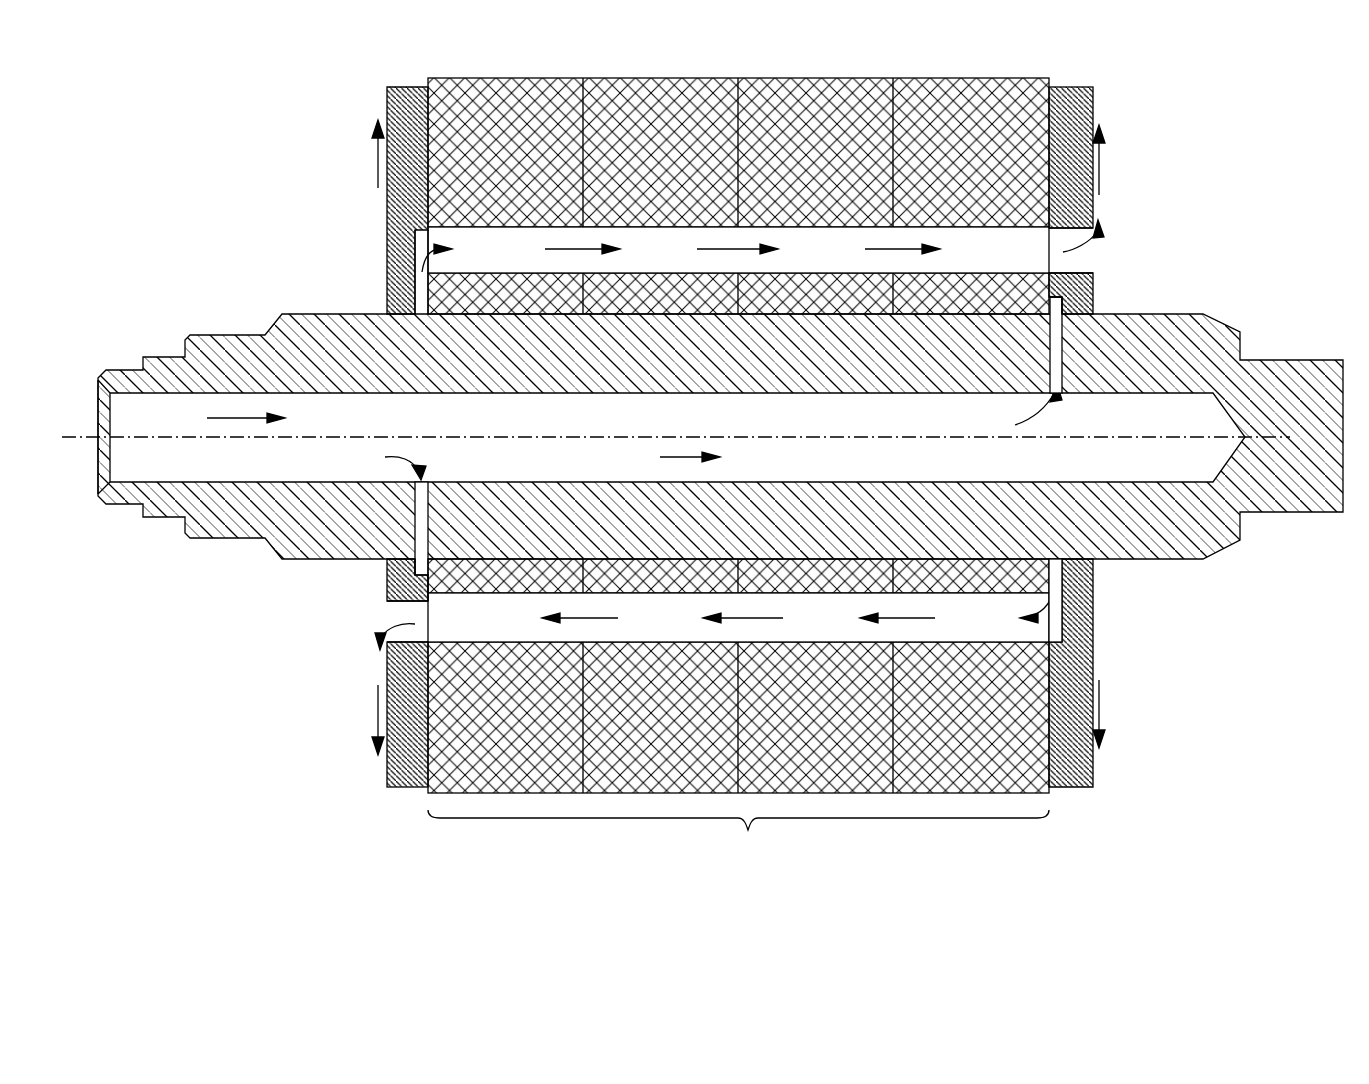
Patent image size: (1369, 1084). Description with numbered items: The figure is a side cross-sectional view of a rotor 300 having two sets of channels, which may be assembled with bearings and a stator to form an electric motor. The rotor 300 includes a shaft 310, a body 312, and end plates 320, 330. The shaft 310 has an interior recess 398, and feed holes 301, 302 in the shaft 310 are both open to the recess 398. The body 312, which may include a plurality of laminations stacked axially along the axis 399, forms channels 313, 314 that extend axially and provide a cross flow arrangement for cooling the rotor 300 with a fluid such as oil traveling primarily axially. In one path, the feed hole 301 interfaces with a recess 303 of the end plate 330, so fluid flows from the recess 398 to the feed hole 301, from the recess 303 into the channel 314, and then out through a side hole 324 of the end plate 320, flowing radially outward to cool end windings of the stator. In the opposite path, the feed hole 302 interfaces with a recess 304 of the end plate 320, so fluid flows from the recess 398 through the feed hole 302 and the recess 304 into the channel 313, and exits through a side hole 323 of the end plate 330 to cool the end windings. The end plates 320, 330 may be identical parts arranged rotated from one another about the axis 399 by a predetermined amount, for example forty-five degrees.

The rotor 300 is at (220, 109).
The feed hole 301 is at (1065, 368).
The feed hole 302 is at (413, 512).
The recess 303 is at (1093, 305).
The recess 304 is at (387, 243).
The shaft 310 is at (343, 354).
The body 312 is at (681, 147).
The channel 313 is at (681, 256).
The channel 314 is at (682, 634).
The end plate 320 is at (387, 107).
The side hole 323 is at (1093, 268).
The side hole 324 is at (387, 603).
The end plate 330 is at (1093, 100).
The recess 398 is at (1198, 474).
The axis 399 is at (68, 437).